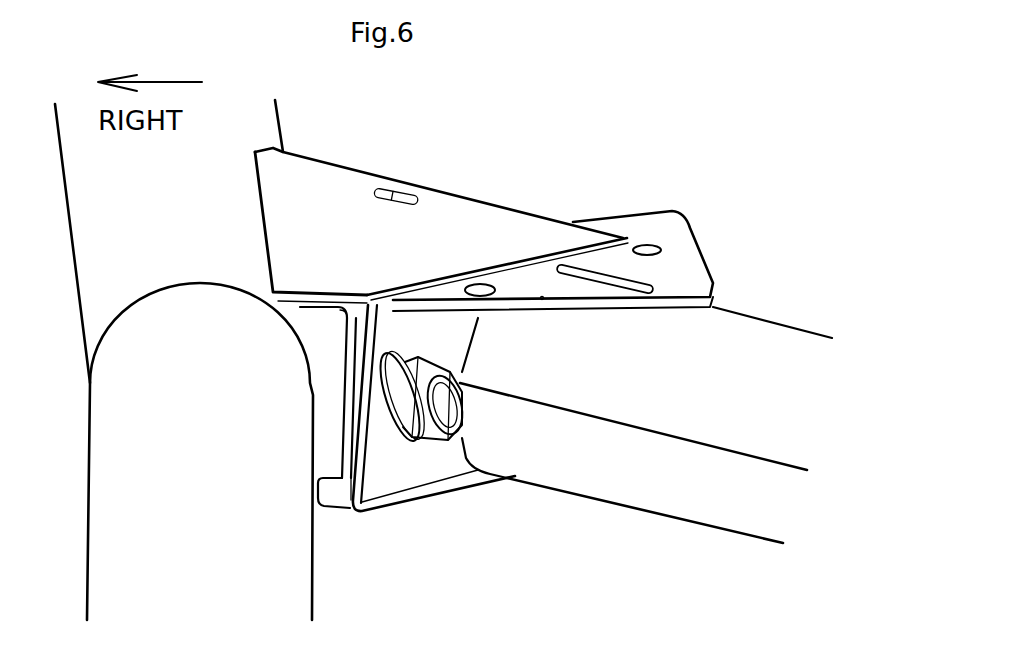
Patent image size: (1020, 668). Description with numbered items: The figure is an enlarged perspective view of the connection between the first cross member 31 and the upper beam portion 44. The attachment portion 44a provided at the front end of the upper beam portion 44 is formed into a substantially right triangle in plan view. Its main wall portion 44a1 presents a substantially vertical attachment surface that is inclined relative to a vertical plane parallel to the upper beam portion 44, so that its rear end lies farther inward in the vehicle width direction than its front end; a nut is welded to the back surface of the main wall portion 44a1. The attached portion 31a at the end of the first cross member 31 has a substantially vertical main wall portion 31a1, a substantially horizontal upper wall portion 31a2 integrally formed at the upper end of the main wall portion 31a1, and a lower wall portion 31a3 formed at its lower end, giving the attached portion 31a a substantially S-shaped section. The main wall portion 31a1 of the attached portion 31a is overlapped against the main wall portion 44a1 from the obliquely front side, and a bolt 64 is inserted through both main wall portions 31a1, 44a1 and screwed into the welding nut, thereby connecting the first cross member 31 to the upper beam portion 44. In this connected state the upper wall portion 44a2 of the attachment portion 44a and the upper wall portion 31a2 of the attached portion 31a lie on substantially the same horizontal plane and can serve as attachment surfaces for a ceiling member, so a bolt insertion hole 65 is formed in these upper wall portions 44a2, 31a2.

The first cross member 31 is at (687, 470).
The attached portion 31a is at (475, 409).
The main wall portion 31a1 is at (367, 460).
The upper wall portion 31a2 is at (530, 288).
The lower wall portion 31a3 is at (333, 507).
The upper beam portion 44 is at (250, 127).
The attachment portion 44a is at (428, 182).
The main wall portion 44a1 is at (335, 420).
The upper wall portion 44a2 is at (453, 243).
The bolt 64 is at (437, 405).
The bolt insertion hole 65 is at (650, 243).